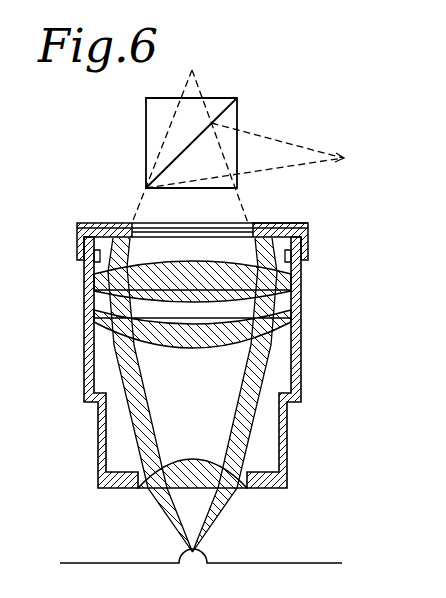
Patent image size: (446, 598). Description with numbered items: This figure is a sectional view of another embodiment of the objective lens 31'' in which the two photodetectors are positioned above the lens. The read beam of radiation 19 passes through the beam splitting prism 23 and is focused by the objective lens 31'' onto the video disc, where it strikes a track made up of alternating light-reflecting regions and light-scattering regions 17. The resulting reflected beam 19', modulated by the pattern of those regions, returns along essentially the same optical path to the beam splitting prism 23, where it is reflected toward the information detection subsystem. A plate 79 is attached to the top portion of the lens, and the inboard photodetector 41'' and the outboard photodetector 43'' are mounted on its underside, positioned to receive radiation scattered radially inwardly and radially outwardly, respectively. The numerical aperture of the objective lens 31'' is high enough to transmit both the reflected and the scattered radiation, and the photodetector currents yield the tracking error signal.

The light-scattering region 17 is at (203, 556).
The read beam of radiation 19 is at (197, 140).
The reflected beam 19' is at (245, 149).
The beam splitting prism 23 is at (146, 128).
The objective lens 31'' is at (223, 390).
The inboard photodetector 41'' is at (158, 253).
The outboard photodetector 43'' is at (223, 335).
The plate 79 is at (108, 222).